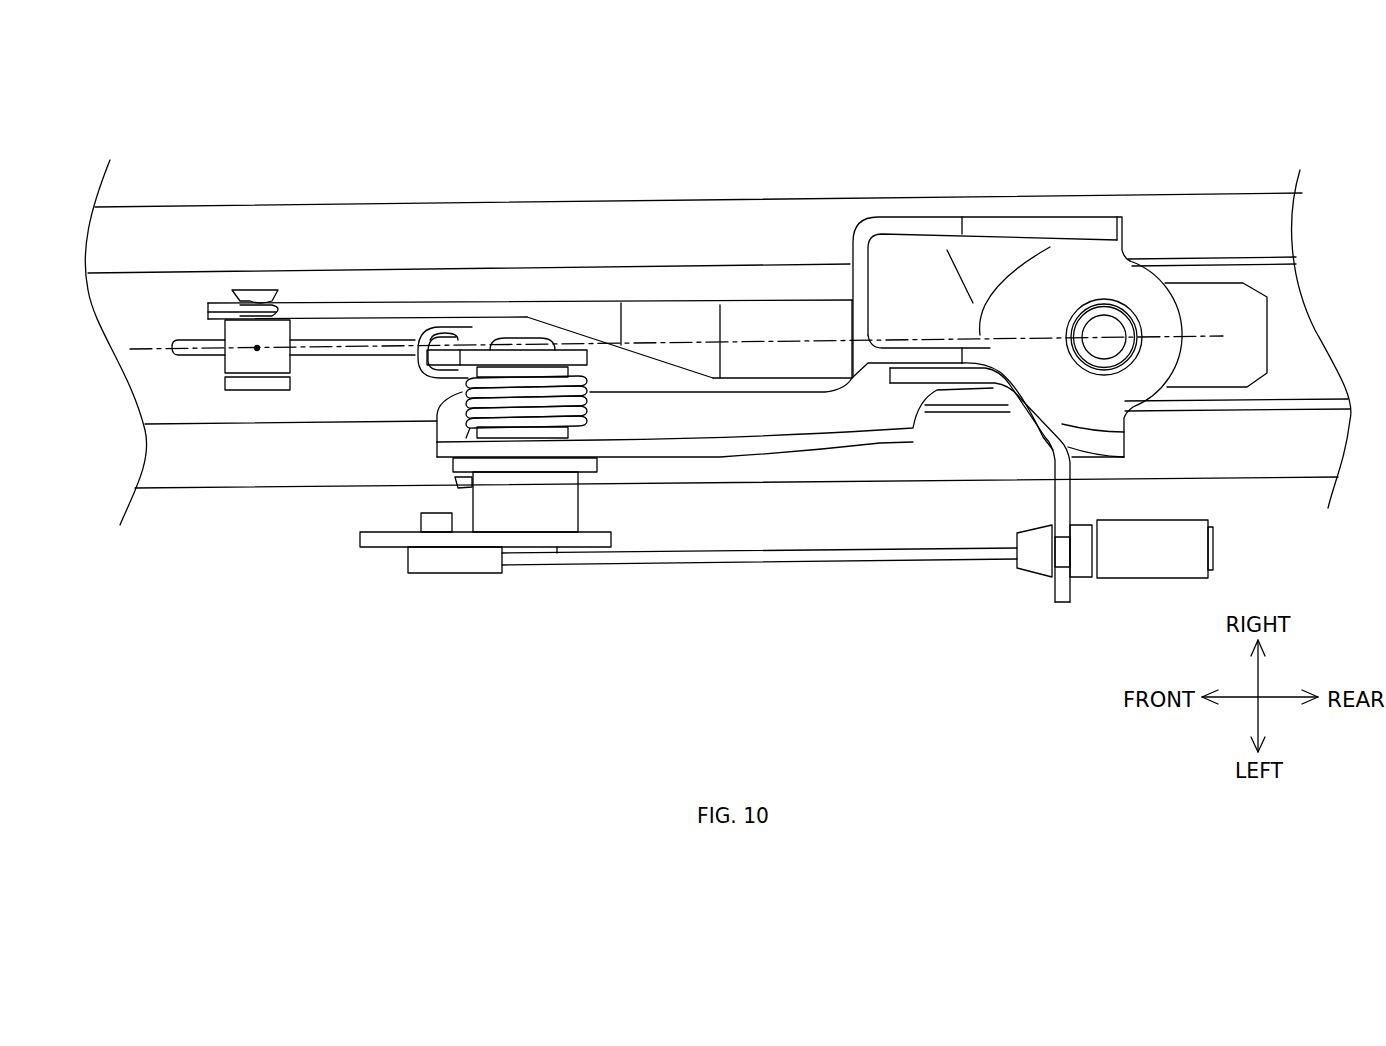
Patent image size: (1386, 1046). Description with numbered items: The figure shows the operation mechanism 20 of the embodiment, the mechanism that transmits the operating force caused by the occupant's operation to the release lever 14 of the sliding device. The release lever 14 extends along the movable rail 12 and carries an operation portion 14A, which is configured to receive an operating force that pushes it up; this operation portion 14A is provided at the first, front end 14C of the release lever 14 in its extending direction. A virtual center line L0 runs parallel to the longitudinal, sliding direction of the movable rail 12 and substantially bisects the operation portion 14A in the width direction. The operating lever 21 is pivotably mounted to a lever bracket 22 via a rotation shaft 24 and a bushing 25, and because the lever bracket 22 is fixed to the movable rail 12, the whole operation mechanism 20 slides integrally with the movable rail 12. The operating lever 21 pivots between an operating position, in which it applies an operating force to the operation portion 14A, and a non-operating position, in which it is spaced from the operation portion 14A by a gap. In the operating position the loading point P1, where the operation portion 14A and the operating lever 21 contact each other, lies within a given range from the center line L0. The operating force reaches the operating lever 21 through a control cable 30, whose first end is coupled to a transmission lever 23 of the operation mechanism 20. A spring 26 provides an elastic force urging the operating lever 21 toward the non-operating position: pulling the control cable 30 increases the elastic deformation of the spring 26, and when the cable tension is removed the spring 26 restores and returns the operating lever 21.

The movable rail 12 is at (1228, 212).
The release lever 14 is at (530, 237).
The operation portion 14A is at (233, 365).
The first (front) end 14C is at (402, 300).
The operation mechanism 20 is at (333, 566).
The operating lever 21 is at (330, 354).
The lever bracket 22 is at (847, 415).
The transmission lever 23 is at (380, 548).
The rotation shaft 24 is at (578, 503).
The bushing 25 is at (597, 465).
The spring 26 is at (587, 403).
The control cable 30 is at (955, 565).
The loading point P1 is at (255, 351).
The center line L0 is at (793, 340).